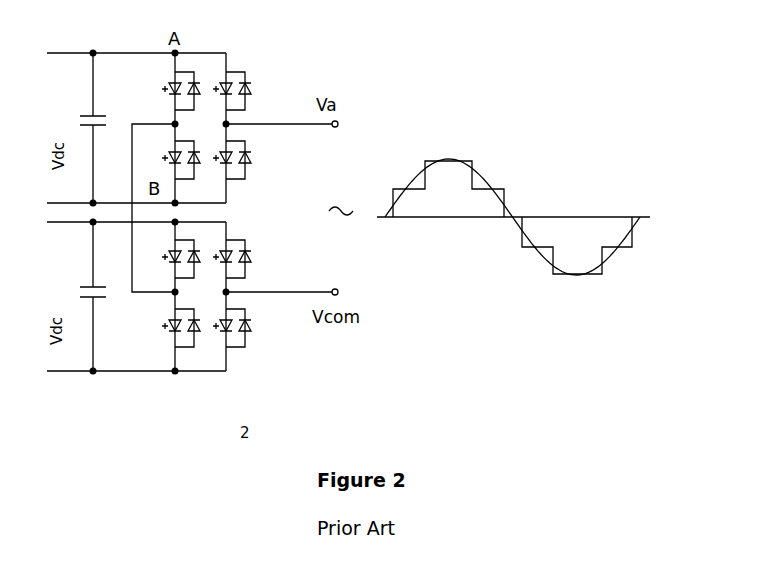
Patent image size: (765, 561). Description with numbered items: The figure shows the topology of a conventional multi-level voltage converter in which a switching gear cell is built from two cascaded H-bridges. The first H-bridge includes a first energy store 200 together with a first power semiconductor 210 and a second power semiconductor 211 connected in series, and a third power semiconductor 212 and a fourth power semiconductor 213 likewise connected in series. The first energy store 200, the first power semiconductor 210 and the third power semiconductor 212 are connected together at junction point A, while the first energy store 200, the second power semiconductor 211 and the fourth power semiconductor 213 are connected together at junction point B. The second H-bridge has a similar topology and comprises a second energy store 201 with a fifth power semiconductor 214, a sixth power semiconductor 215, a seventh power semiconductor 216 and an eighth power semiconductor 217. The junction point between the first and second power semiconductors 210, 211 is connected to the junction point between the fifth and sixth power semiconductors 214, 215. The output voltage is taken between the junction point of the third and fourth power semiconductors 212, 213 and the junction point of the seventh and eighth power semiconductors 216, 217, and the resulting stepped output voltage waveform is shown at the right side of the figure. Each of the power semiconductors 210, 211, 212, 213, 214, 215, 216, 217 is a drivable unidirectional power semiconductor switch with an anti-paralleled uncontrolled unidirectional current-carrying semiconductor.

The first energy store 200 is at (75, 128).
The second energy store 201 is at (75, 296).
The first power semiconductor 210 is at (159, 87).
The second power semiconductor 211 is at (158, 160).
The third power semiconductor 212 is at (250, 85).
The fourth power semiconductor 213 is at (251, 160).
The fifth power semiconductor 214 is at (166, 255).
The sixth power semiconductor 215 is at (160, 328).
The seventh power semiconductor 216 is at (249, 253).
The eighth power semiconductor 217 is at (253, 333).